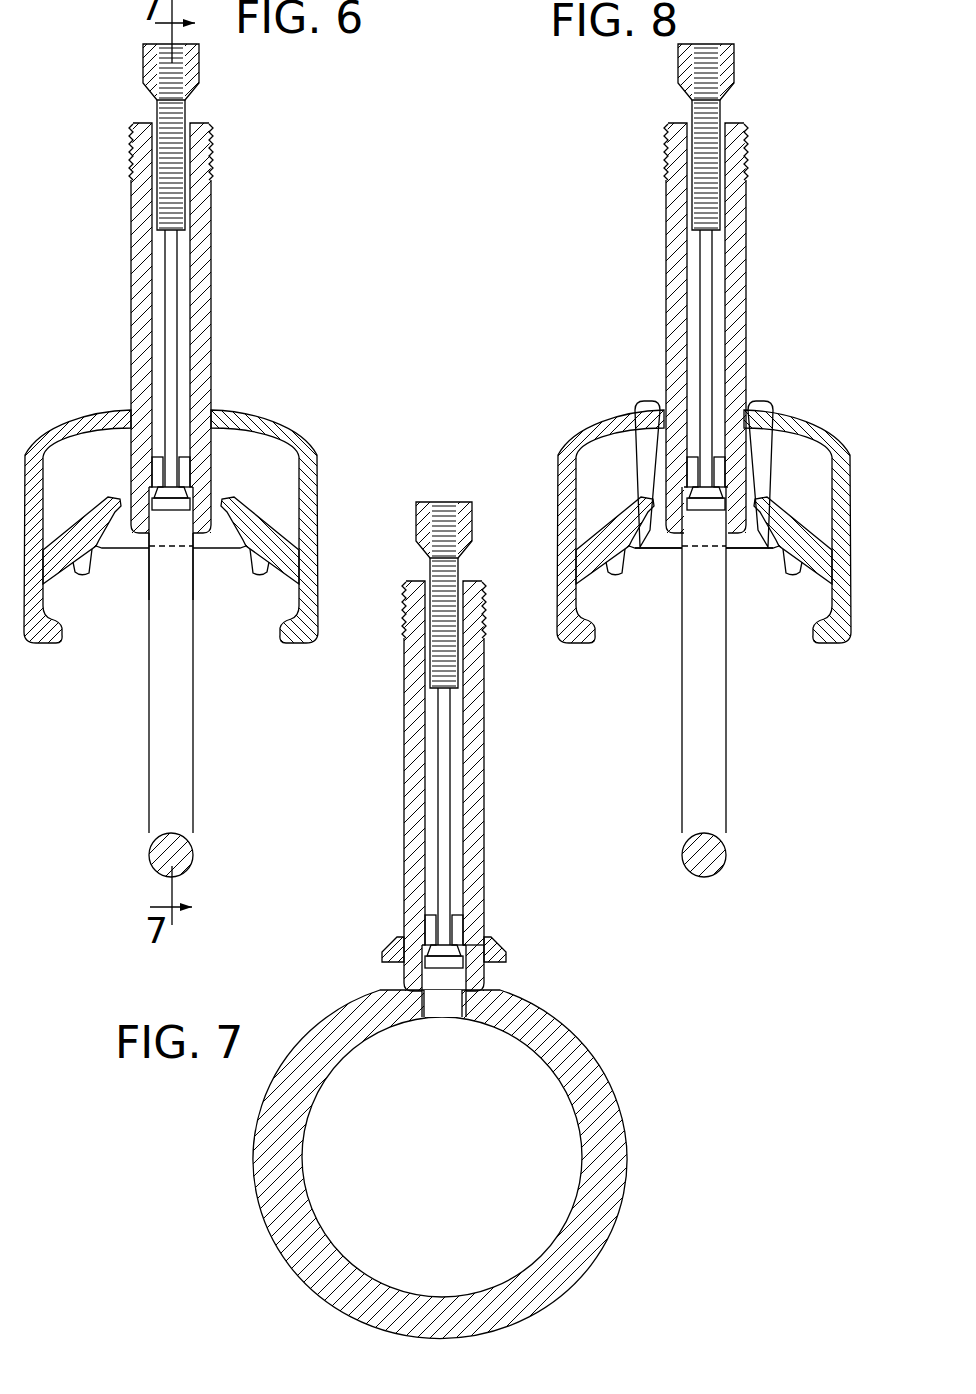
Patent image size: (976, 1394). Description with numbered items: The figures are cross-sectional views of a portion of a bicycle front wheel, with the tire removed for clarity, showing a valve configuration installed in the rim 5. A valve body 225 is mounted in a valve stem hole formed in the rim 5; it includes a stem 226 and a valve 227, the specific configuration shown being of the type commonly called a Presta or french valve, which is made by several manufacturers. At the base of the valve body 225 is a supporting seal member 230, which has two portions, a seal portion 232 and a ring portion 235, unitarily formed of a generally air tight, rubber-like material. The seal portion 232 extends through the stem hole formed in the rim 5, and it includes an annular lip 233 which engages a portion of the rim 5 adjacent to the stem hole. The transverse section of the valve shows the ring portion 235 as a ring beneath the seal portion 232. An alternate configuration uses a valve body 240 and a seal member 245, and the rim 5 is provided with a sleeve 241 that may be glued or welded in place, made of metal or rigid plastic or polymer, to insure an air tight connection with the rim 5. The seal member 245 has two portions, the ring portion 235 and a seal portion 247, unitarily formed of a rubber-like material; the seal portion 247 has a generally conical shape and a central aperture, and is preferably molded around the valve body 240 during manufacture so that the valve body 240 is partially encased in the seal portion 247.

In FIG. 6, the rim 5 is at (303, 443).
In FIG. 8, the rim 5 is at (835, 445).
In FIG. 6, the valve body 225 is at (225, 288).
In FIG. 7, the valve body 225 is at (497, 800).
In FIG. 6, the stem 226 is at (213, 212).
In FIG. 6, the valve 227 is at (190, 110).
In FIG. 6, the supporting seal member 230 is at (200, 600).
In FIG. 7, the supporting seal member 230 is at (369, 940).
In FIG. 7, the seal portion 232 is at (482, 945).
In FIG. 7, the annular lip 233 is at (506, 955).
In FIG. 6, the ring portion 235 is at (180, 781).
In FIG. 8, the ring portion 235 is at (713, 781).
In FIG. 7, the ring portion 235 is at (563, 1050).
In FIG. 8, the valve body 240 is at (770, 321).
In FIG. 8, the sleeve 241 is at (752, 402).
In FIG. 8, the seal member 245 is at (666, 589).
In FIG. 8, the seal portion 247 is at (747, 540).